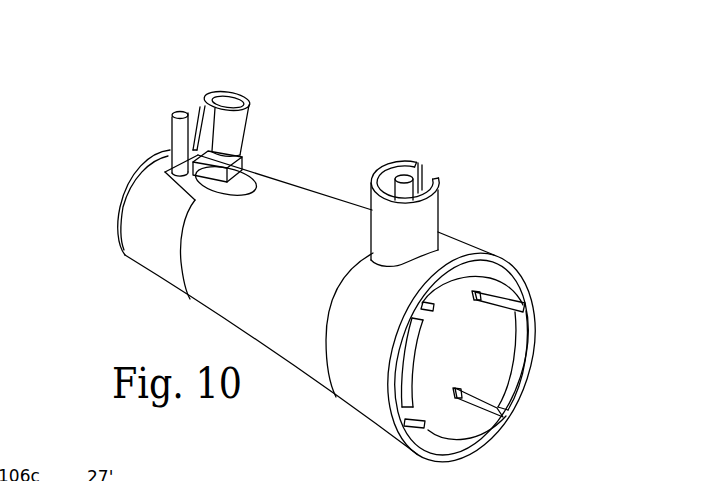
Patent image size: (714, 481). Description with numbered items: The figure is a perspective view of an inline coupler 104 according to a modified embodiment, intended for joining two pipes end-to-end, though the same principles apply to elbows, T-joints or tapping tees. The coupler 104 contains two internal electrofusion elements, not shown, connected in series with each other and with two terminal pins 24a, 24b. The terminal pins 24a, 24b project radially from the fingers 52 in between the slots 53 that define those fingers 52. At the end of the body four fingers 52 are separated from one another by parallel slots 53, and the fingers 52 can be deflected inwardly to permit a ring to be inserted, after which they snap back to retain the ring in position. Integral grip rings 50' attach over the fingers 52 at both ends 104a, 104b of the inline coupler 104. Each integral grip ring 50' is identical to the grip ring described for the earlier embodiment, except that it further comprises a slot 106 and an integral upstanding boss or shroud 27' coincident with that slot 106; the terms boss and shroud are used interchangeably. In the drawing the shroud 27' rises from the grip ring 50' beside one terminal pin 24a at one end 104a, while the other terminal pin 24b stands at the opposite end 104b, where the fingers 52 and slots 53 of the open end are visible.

The inline coupler 104 is at (377, 112).
The end of the inline coupler 104a is at (122, 201).
The end of the inline coupler 104b is at (531, 383).
The slot 106 is at (248, 183).
The terminal pin 24a is at (172, 118).
The terminal pin 24b is at (412, 178).
The integral upstanding boss or shroud 27' is at (238, 97).
The integral grip ring 50' is at (315, 336).
The finger 52 is at (525, 346).
The slot 53 is at (497, 413).